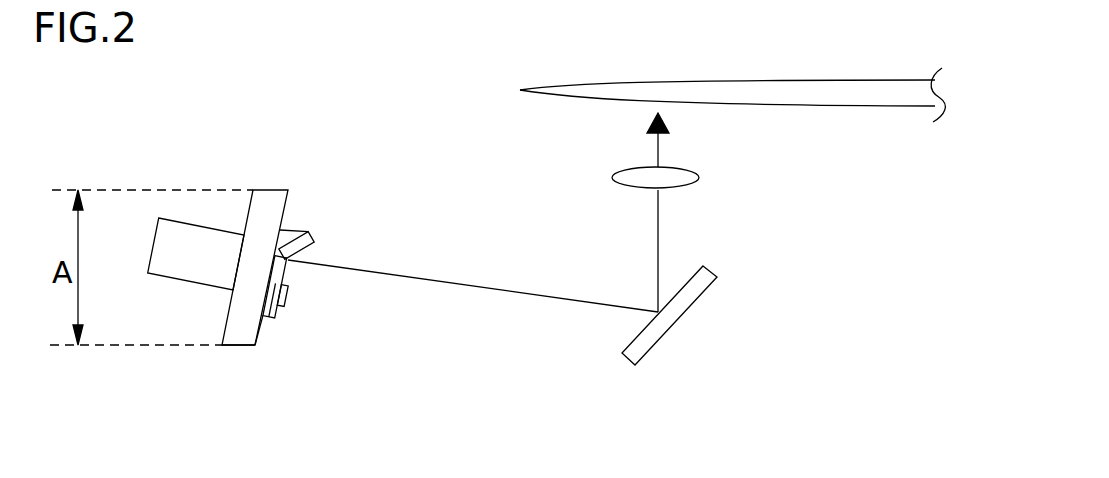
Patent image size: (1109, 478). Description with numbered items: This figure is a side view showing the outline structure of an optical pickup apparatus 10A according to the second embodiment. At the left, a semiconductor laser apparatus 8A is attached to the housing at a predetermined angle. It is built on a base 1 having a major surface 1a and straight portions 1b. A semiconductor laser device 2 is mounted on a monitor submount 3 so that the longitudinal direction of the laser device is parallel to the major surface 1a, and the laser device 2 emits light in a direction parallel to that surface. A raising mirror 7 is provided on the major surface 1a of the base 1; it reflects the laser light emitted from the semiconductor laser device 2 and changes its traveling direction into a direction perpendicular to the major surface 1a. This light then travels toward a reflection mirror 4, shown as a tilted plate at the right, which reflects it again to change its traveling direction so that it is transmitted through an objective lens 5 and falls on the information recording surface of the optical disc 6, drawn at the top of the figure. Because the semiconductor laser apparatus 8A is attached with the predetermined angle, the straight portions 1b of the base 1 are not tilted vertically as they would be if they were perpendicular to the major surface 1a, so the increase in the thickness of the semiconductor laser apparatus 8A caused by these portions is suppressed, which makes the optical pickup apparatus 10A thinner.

The base 1 is at (247, 213).
The major surface 1a is at (262, 332).
The straight portions 1b is at (237, 350).
The semiconductor laser device 2 is at (293, 289).
The monitor submount 3 is at (278, 325).
The reflection mirror 4 is at (700, 308).
The objective lens 5 is at (678, 179).
The optical disc 6 is at (706, 95).
The raising mirror 7 is at (312, 234).
The semiconductor laser apparatus 8A is at (291, 141).
The optical pickup apparatus 10A is at (770, 211).